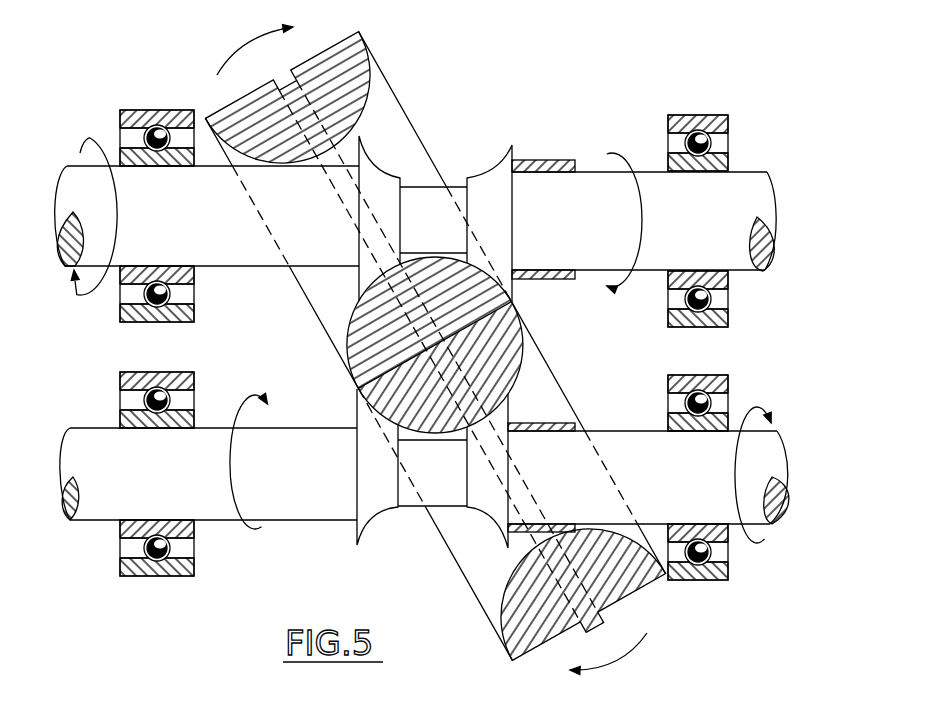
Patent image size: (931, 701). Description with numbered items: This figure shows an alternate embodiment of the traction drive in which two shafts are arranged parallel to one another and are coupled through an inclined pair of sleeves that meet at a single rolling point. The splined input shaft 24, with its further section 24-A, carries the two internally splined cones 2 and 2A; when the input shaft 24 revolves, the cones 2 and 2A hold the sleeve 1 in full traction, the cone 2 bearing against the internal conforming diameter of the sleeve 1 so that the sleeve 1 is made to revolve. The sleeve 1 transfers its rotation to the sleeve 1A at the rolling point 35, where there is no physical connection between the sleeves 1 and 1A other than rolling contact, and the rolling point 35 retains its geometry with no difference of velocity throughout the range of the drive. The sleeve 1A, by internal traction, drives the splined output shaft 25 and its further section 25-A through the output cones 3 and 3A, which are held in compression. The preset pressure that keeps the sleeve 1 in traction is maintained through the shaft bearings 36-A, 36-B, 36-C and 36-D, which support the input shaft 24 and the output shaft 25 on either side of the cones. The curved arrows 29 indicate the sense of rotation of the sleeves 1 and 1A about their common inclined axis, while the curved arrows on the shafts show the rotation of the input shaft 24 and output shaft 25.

The sleeve 1 is at (337, 75).
The sleeve 1A is at (520, 620).
The cone 2 is at (387, 160).
The cone 2A is at (490, 150).
The output cone 3 is at (362, 497).
The output cone 3A is at (483, 508).
The input shaft 24 is at (130, 235).
The upper shaft section 24-A is at (743, 195).
The output shaft 25 is at (110, 505).
The lower shaft section 25-A is at (758, 462).
The direction of rotation 29 is at (432, 360).
The rolling point 35 is at (350, 307).
The shaft bearing 36-A is at (135, 110).
The shaft bearing 36-B is at (685, 115).
The shaft bearing 36-C is at (192, 562).
The shaft bearing 36-D is at (710, 380).